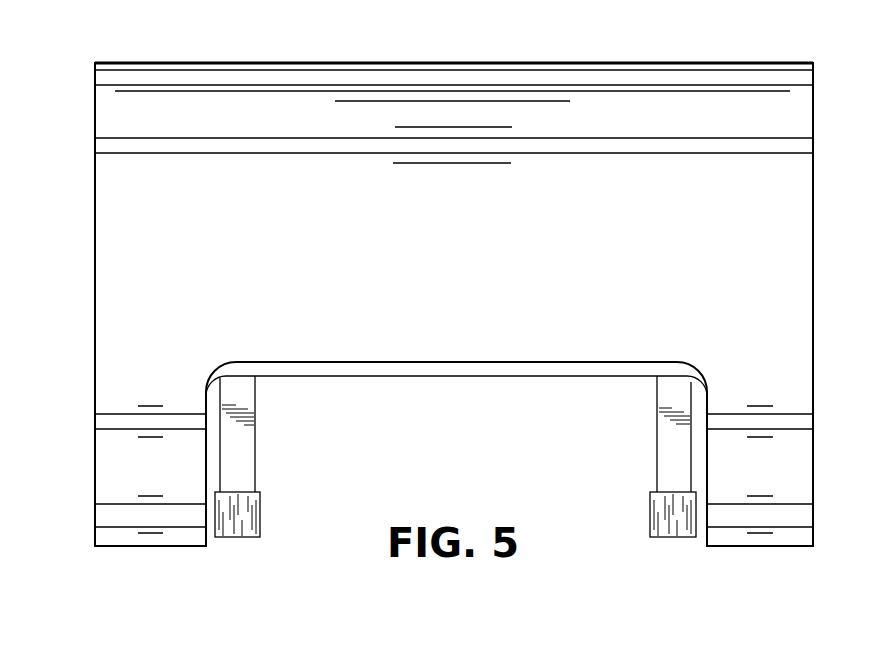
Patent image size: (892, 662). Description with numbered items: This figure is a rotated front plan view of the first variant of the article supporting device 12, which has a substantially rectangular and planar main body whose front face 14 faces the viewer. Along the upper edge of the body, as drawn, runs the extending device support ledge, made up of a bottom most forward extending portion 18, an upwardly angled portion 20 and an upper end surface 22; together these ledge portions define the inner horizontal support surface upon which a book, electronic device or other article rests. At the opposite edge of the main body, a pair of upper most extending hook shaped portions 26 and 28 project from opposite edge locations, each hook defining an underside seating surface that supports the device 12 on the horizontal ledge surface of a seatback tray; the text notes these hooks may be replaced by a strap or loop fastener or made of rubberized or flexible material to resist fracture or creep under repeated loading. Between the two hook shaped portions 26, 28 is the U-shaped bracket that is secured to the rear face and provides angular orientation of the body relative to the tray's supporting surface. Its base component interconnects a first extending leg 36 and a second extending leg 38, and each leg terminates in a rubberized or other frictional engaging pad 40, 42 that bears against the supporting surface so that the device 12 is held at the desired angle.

The support device 12 is at (78, 363).
The front face 14 is at (434, 262).
The bottom most forward extending portion 18 is at (841, 14).
The upwardly angled portion 20 is at (754, 74).
The upper end surface 22 is at (707, 88).
The hook shaped portion 26 is at (765, 546).
The hook shaped portion 28 is at (152, 546).
The first extending leg 36 is at (243, 447).
The second extending leg 38 is at (668, 457).
The frictional engaging pad 40 is at (658, 518).
The frictional engaging pad 42 is at (252, 518).